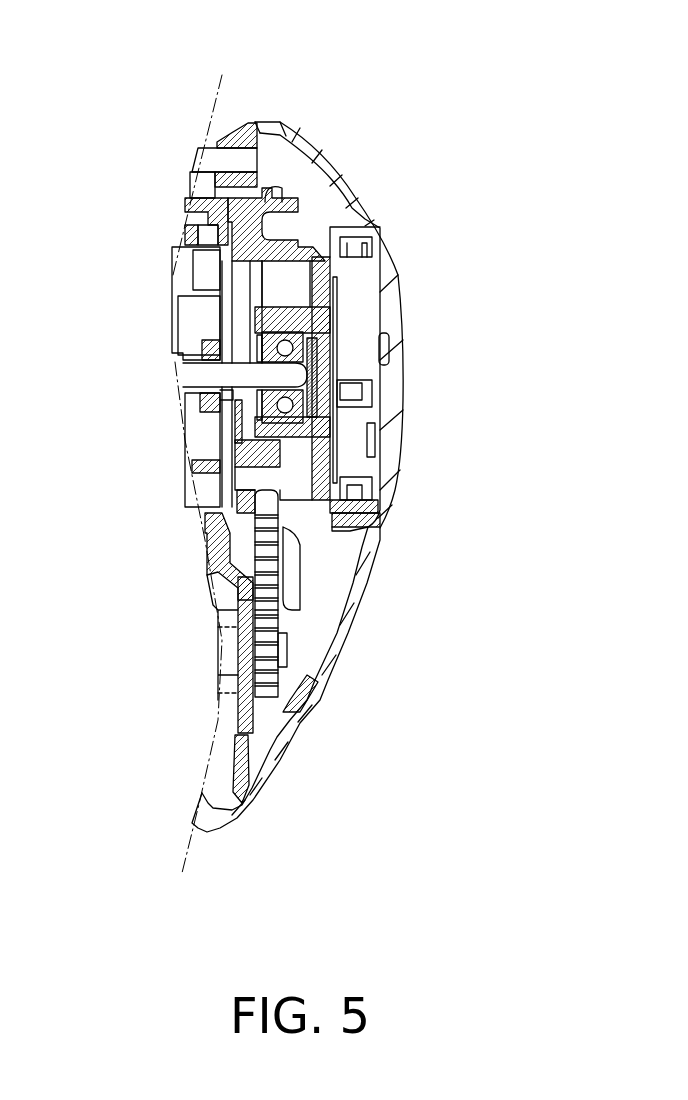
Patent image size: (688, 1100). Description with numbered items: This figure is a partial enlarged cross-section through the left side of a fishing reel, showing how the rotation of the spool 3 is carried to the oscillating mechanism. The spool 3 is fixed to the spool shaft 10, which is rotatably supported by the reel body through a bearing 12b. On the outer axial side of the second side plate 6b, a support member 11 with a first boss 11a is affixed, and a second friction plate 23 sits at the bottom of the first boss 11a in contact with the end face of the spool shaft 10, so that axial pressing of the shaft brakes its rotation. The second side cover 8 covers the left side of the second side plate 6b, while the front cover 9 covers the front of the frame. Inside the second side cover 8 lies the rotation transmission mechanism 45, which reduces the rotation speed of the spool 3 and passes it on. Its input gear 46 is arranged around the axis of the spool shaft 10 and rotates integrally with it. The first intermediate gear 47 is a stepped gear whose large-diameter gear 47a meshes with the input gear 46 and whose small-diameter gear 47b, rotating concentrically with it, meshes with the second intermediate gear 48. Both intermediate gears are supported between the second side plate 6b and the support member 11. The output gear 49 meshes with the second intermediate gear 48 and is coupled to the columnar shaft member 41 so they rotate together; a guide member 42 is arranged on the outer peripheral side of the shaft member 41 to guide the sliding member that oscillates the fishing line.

The spool 3 is at (200, 235).
The second side plate 6b is at (231, 127).
The second side cover 8 is at (297, 142).
The front cover 9 is at (292, 735).
The spool shaft 10 is at (187, 370).
The support member 11 is at (303, 241).
The first boss 11a is at (277, 322).
The bearing 12b is at (338, 418).
The second friction plate 23 is at (312, 350).
The shaft member 41 is at (228, 653).
The guide member 42 is at (225, 683).
The rotation transmission mechanism 45 is at (216, 580).
The input gear 46 is at (225, 383).
The first intermediate gear 47 is at (293, 447).
The large-diameter gear 47a is at (227, 427).
The small-diameter gear 47b is at (227, 477).
The second intermediate gear 48 is at (267, 555).
The output gear 49 is at (268, 673).